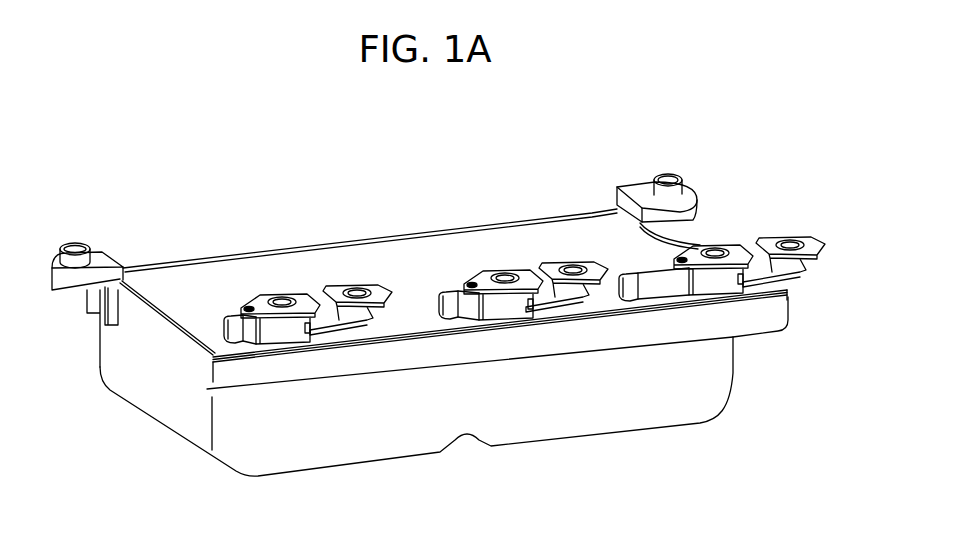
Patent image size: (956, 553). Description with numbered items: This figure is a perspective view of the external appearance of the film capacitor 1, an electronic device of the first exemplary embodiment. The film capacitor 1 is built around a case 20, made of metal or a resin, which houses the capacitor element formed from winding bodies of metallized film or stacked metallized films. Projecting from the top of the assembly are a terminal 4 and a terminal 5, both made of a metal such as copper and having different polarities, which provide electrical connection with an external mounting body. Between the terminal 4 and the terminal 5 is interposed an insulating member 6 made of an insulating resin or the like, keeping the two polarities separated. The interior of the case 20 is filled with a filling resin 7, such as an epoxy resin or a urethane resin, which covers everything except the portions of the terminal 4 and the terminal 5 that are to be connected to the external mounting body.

The film capacitor 1 is at (528, 203).
The terminal 4 is at (375, 283).
The terminal 5 is at (303, 293).
The insulating member 6 is at (223, 317).
The filling resin 7 is at (442, 257).
The case 20 is at (694, 387).